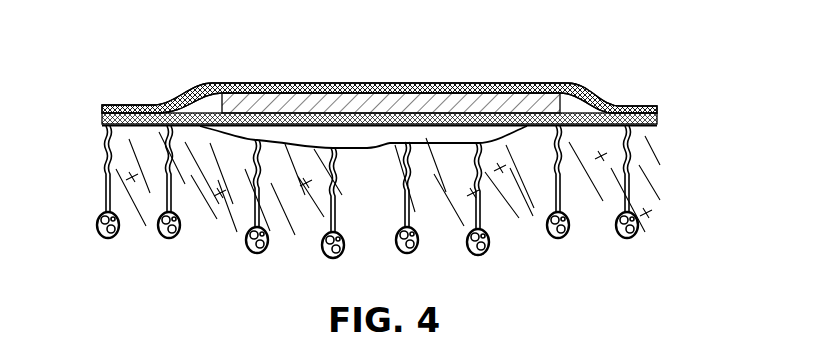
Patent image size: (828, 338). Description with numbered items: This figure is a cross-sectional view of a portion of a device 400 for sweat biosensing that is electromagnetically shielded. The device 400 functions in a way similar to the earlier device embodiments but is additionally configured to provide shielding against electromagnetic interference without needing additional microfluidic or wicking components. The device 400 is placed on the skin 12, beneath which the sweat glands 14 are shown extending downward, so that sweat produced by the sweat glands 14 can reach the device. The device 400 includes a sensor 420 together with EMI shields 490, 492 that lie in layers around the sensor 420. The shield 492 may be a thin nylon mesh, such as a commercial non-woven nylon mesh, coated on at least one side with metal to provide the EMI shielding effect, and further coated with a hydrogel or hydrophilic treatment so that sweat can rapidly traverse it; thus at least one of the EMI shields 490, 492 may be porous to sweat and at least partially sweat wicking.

The device 400 is at (114, 30).
The EMI shield 490 is at (408, 88).
The EMI shield 492 is at (203, 115).
The sensor 420 is at (535, 100).
The skin 12 is at (583, 205).
The sweat glands 14 is at (180, 225).